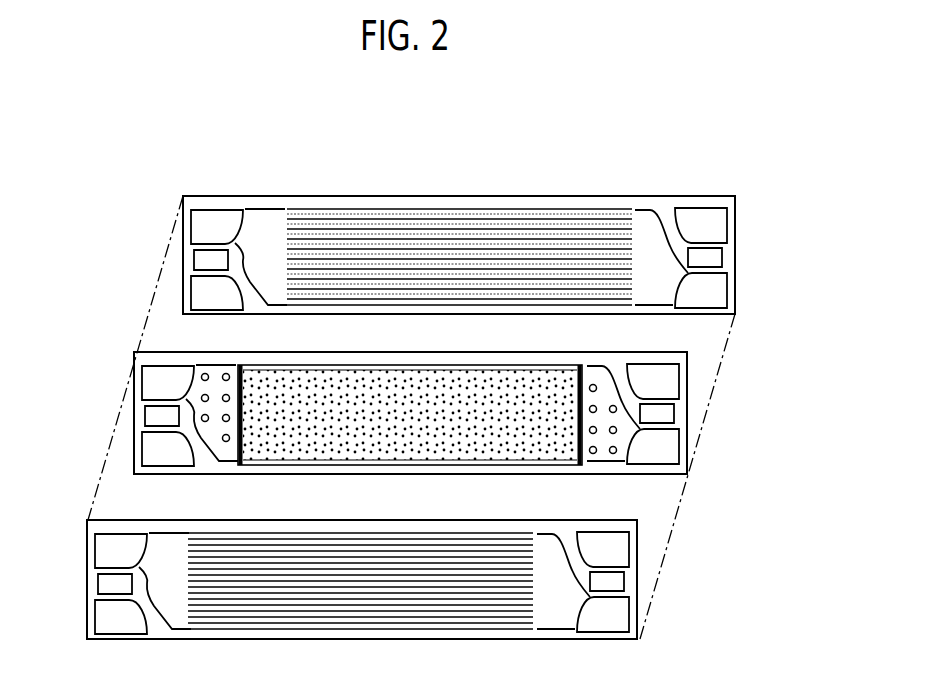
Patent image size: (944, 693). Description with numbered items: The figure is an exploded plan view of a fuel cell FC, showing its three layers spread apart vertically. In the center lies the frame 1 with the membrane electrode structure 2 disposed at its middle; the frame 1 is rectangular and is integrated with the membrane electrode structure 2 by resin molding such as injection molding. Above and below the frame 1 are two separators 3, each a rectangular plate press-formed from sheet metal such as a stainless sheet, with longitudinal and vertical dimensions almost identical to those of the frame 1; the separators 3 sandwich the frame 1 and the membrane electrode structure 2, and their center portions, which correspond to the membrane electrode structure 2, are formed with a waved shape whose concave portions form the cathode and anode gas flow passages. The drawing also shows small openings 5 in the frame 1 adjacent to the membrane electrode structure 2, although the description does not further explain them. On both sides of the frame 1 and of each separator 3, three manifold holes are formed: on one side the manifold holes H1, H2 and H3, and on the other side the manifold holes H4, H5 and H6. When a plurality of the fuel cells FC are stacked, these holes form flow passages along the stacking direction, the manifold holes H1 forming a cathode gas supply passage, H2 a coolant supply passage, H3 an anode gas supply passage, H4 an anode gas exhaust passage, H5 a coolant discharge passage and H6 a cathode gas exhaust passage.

The fuel cell FC is at (622, 176).
The frame 1 is at (192, 397).
The membrane electrode structure 2 is at (422, 378).
The separator 3 is at (457, 207).
The through holes 5 is at (206, 422).
The manifold hole H1 is at (200, 229).
The manifold hole H2 is at (200, 259).
The manifold hole H3 is at (200, 293).
The manifold hole H4 is at (718, 225).
The manifold hole H5 is at (718, 255).
The manifold hole H6 is at (718, 290).